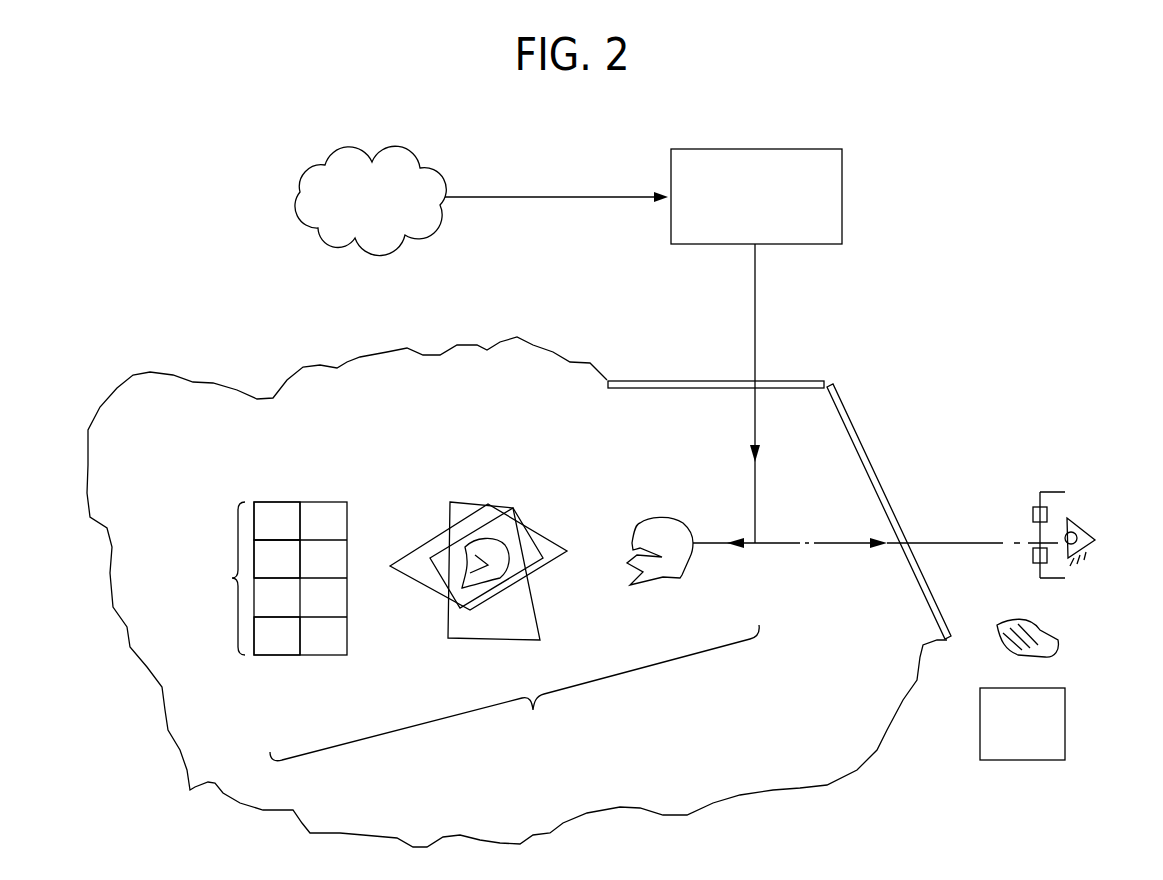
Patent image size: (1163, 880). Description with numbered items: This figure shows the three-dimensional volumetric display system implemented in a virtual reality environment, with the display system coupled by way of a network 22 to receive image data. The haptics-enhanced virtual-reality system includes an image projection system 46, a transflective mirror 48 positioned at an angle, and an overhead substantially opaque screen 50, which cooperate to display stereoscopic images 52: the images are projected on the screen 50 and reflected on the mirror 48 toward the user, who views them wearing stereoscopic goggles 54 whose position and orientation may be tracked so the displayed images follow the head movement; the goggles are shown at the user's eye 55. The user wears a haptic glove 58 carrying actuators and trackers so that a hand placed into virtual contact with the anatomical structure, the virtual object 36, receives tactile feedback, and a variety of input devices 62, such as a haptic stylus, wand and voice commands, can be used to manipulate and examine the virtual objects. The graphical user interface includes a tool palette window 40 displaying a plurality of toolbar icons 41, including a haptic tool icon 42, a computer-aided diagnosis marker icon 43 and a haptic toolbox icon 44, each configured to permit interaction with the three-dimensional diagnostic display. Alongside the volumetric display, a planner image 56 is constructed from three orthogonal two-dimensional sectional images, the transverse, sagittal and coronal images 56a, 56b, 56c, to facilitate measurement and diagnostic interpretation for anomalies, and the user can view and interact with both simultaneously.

The network 22 is at (438, 161).
The virtual object 36 is at (683, 518).
The tool palette window 40 is at (333, 485).
The toolbar icons 41 is at (258, 628).
The haptic tool icon 42 is at (275, 523).
The 3D Computer-Aided Diagnosis (CAD) marker icon 43 is at (279, 562).
The haptic toolbox icon 44 is at (280, 600).
The image projection system 46 is at (768, 149).
The transflective mirror 48 is at (865, 447).
The overhead substantially opaque screen 50 is at (650, 381).
The stereoscopic images 52 is at (514, 693).
The 3D goggles 54 is at (1027, 487).
The eye of user 55 is at (1096, 512).
The 3D planner image 56 is at (508, 526).
The transverse image 56a is at (550, 536).
The sagittal image 56b is at (543, 625).
The coronal image 56c is at (513, 508).
The haptic glove 58 is at (1050, 615).
The input device 62 is at (1015, 760).